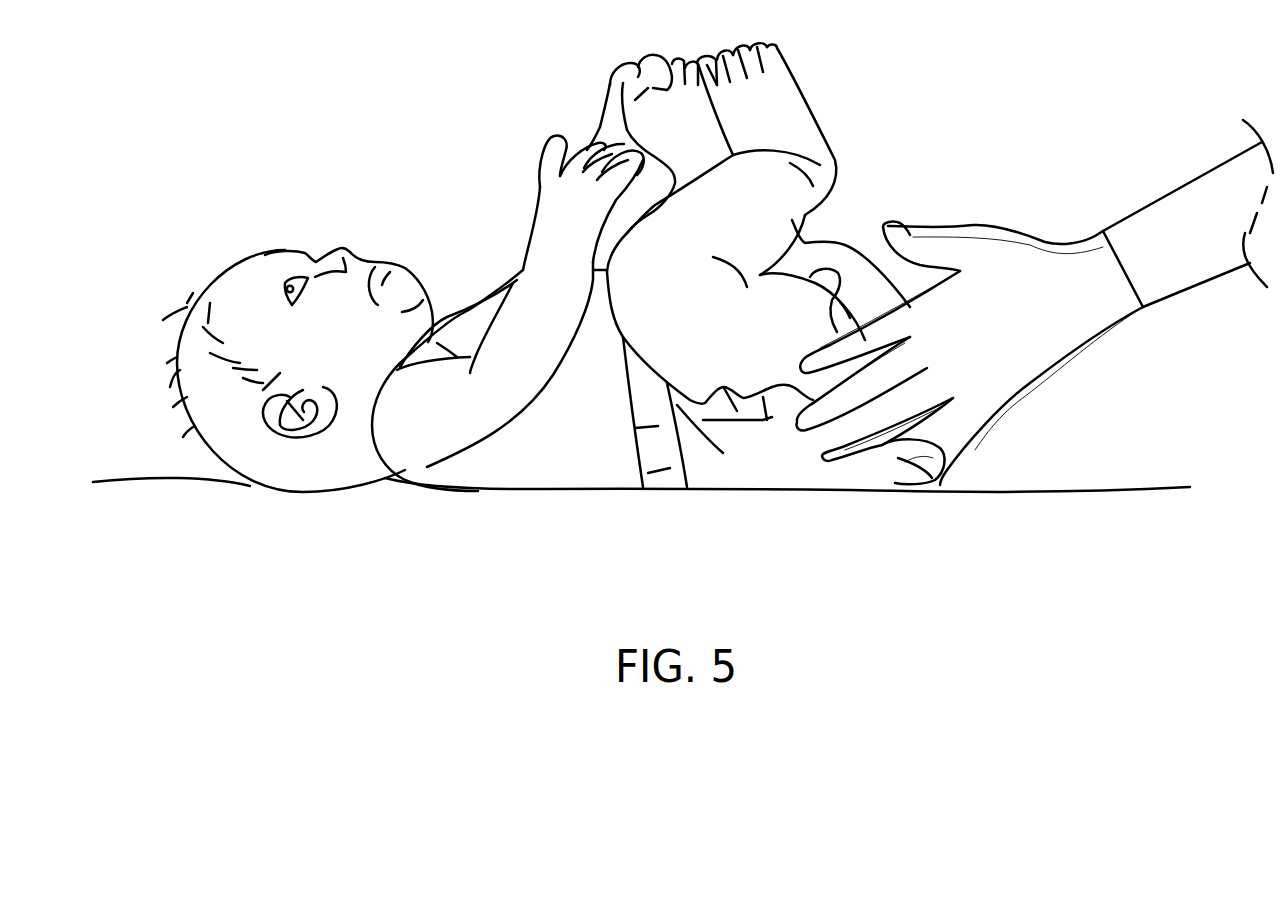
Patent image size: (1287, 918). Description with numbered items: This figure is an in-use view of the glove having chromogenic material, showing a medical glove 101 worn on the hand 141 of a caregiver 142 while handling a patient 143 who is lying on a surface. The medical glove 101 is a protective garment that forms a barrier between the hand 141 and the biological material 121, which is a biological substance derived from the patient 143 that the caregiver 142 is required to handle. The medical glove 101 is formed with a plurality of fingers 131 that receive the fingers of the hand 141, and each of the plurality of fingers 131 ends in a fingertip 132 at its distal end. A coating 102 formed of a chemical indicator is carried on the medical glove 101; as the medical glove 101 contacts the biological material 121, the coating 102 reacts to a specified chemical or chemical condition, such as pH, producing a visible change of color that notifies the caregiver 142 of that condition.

The patient 143 is at (170, 255).
The medical glove 101 is at (1000, 287).
The coating 102 is at (810, 363).
The biological material 121 is at (970, 478).
The plurality of fingers 131 is at (873, 430).
The fingertip 132 is at (843, 453).
The hand 141 is at (1127, 267).
The caregiver 142 is at (1230, 298).